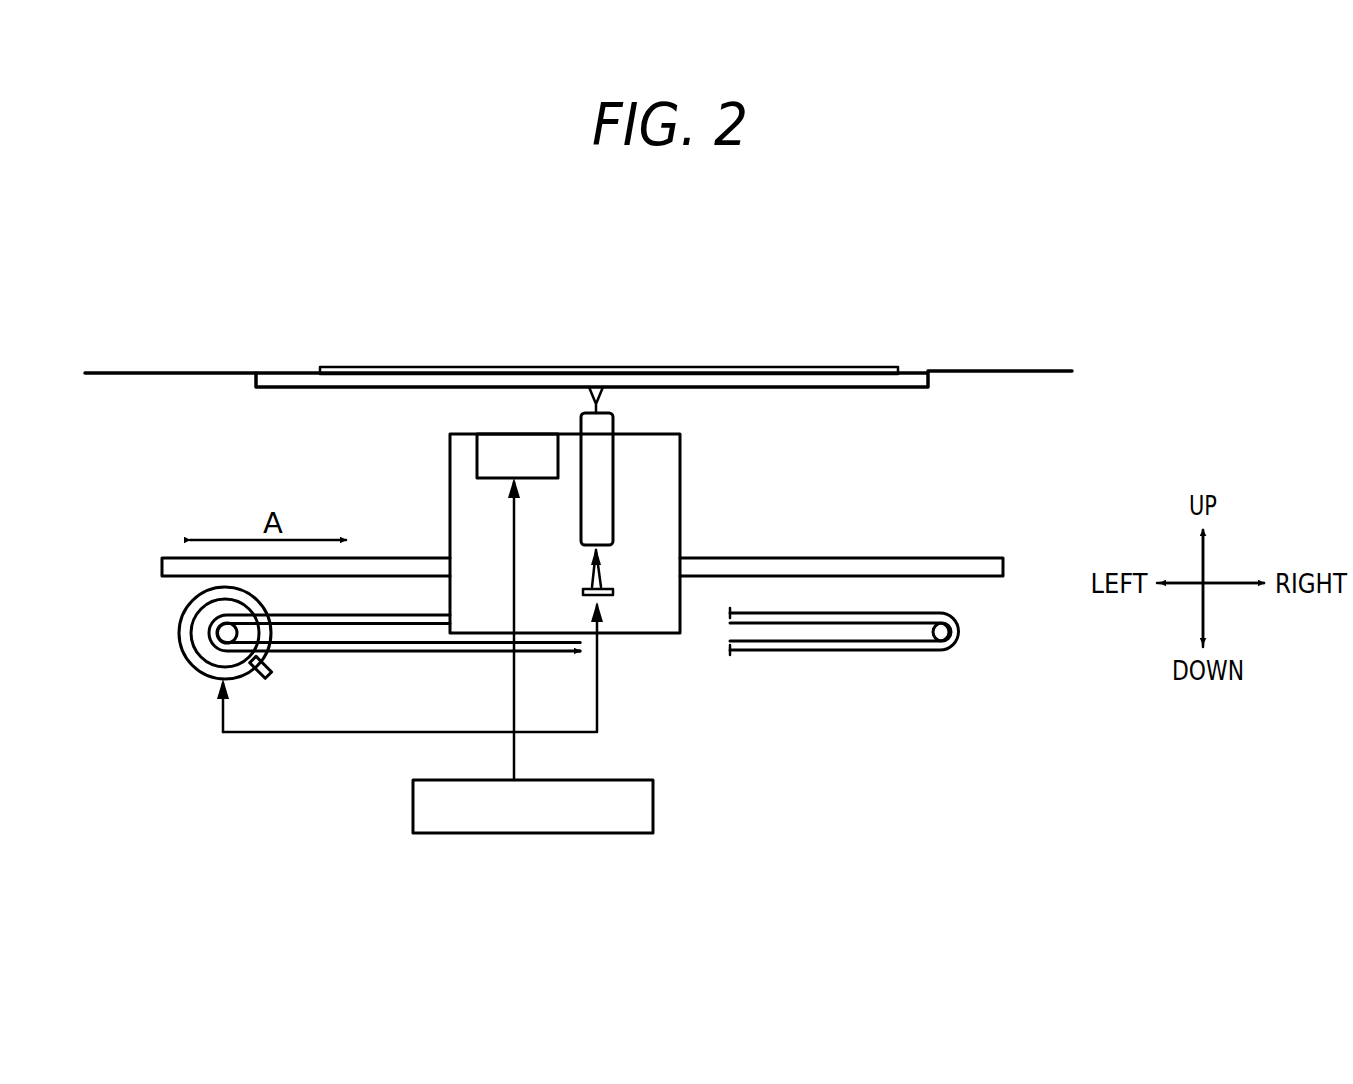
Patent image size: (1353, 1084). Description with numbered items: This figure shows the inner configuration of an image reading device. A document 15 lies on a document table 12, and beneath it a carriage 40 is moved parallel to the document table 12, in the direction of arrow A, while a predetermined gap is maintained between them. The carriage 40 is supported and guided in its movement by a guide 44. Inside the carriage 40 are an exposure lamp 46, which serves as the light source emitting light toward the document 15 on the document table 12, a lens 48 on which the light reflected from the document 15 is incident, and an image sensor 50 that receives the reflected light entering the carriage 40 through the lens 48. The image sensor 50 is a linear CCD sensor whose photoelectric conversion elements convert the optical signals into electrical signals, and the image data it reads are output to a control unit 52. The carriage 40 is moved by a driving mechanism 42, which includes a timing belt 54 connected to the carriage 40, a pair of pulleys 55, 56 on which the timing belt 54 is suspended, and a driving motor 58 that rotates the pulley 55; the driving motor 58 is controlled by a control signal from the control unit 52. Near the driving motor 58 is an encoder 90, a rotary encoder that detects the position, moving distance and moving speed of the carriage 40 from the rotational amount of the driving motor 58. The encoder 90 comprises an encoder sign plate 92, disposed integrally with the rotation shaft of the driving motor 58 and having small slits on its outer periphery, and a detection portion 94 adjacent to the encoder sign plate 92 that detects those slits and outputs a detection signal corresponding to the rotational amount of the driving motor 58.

The document table 12 is at (793, 384).
The document 15 is at (372, 369).
The carriage 40 is at (680, 530).
The driving mechanism 42 is at (178, 603).
The guide 44 is at (890, 558).
The exposure lamp 46 is at (491, 460).
The lens 48 is at (613, 500).
The image sensor 50 is at (614, 596).
The control unit 52 is at (653, 805).
The timing belt 54 is at (510, 649).
The pulley 55 is at (220, 636).
The pulley 56 is at (951, 630).
The driving motor 58 is at (193, 673).
The encoder 90 is at (288, 661).
The encoder sign plate 92 is at (263, 612).
The detection portion 94 is at (263, 676).